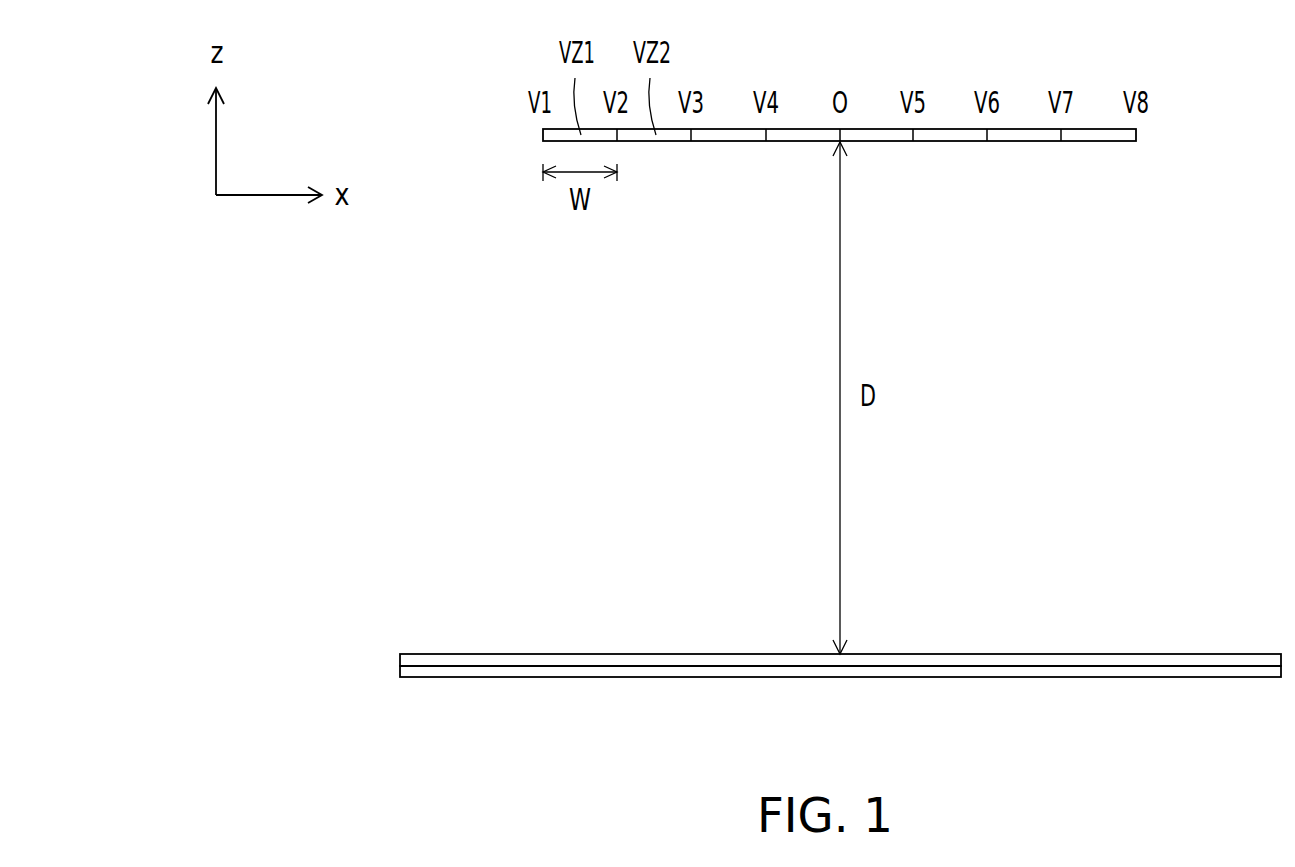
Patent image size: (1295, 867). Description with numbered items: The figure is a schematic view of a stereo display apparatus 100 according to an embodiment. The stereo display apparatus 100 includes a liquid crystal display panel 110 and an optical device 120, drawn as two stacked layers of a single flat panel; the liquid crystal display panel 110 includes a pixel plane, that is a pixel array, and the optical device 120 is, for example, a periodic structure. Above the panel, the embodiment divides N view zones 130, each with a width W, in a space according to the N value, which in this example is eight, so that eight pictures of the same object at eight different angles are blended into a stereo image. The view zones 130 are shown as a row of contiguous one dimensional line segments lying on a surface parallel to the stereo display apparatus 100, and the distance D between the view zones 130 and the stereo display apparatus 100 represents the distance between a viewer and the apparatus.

The view zones 130 is at (1075, 56).
The stereo display apparatus 100 is at (772, 665).
The liquid crystal display panel 110 is at (418, 671).
The optical device 120 is at (416, 661).